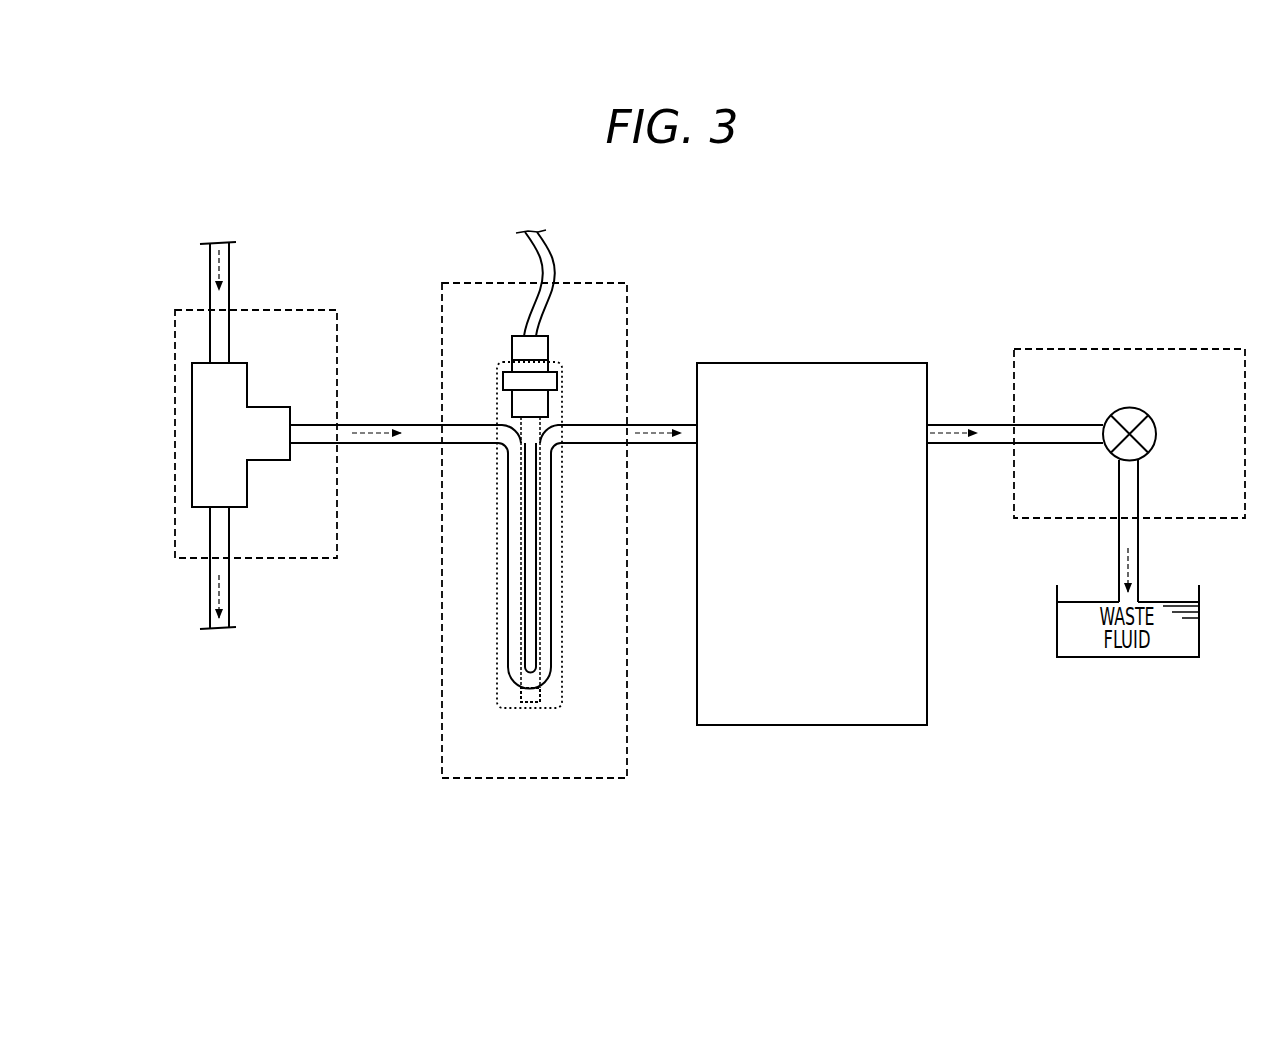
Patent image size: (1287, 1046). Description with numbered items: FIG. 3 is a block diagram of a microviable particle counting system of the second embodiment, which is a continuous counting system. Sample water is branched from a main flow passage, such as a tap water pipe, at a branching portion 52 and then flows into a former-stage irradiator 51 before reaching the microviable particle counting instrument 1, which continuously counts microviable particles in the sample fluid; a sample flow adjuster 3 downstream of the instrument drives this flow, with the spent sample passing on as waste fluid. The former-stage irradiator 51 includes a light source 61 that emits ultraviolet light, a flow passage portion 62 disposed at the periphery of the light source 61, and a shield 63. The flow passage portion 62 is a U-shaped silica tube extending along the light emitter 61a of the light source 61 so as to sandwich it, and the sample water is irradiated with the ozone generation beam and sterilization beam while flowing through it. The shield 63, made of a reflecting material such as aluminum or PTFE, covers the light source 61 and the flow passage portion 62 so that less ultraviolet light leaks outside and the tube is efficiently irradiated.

The microviable particle counting instrument 1 is at (892, 363).
The sample flow adjuster 3 is at (1215, 349).
The former-stage irradiator 51 is at (590, 283).
The branching portion 52 is at (267, 310).
The light source 61 is at (548, 347).
The light emitter 61a is at (540, 696).
The flow passage portion 62 is at (578, 423).
The shield 63 is at (560, 384).